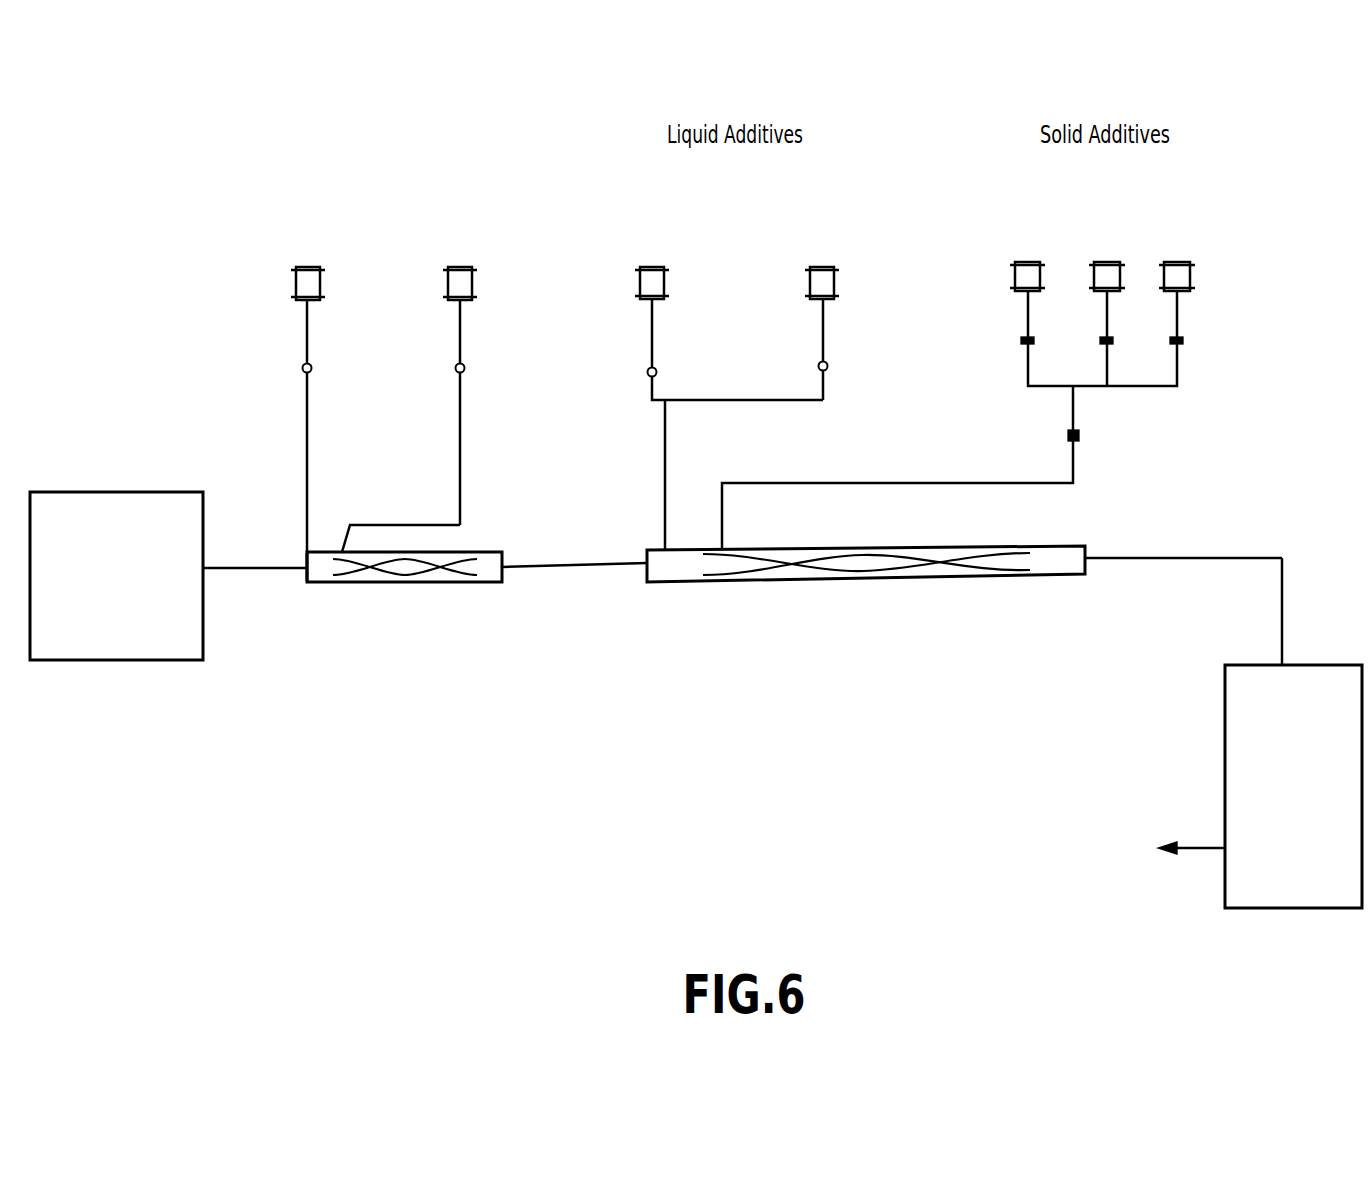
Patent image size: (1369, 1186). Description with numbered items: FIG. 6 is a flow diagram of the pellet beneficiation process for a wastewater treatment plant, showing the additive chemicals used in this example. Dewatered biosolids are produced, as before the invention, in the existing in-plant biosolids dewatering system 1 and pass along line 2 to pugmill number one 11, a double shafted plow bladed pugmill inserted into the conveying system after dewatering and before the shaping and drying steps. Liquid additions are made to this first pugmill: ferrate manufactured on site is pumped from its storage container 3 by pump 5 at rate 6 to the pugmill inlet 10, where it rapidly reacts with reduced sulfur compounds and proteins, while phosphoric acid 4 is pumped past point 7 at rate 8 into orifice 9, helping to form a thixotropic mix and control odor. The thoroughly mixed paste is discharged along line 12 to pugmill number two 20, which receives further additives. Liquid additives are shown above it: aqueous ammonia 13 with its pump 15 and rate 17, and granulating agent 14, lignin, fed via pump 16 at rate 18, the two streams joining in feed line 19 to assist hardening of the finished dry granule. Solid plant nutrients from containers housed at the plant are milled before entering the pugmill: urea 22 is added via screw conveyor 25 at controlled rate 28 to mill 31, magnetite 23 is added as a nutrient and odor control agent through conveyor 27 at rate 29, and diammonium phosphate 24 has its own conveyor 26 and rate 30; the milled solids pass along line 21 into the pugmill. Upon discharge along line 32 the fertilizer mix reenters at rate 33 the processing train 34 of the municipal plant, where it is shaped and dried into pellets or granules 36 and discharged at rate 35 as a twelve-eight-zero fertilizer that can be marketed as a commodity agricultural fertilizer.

The existing WWTP inplant biosolids dewatering system 1 is at (116, 556).
The biosolids feed line 2 is at (255, 588).
The storage container 3 is at (308, 235).
The phosphoric acid 4 is at (470, 235).
The pump 5 is at (296, 368).
The rate 6 is at (294, 426).
The phosphoric acid valve 7 is at (472, 362).
The rate 8 is at (439, 412).
The orifice 9 is at (401, 537).
The pug mill inlet 10 is at (315, 588).
The pugmill #1 11 is at (404, 610).
The transfer line to second pug mill 12 is at (574, 546).
The aqueous ammonia source 13 is at (648, 235).
The granulating agent 14 is at (823, 225).
The aqueous ammonia valve 15 is at (633, 354).
The pump 16 is at (801, 350).
The aqueous ammonia feed line 17 is at (717, 351).
The rate 18 is at (801, 349).
The liquid additives feed line 19 is at (642, 475).
The pugmill #2 20 is at (866, 536).
The solid additives feed line 21 is at (897, 495).
The urea 22 is at (1014, 243).
The magnetite 23 is at (1093, 229).
The diammonium phosphate source 24 is at (1210, 228).
The screw conveyor 25 is at (1006, 337).
The magnetite valve 26 is at (1085, 340).
The conveyor 27 is at (1156, 337).
The controlled rate 28 is at (1031, 339).
The magnetite feed line 29 is at (1077, 339).
The DAP feed line 30 is at (1142, 338).
The mill 31 is at (1068, 426).
The pug mill discharge line 32 is at (1183, 541).
The rate 33 is at (1301, 611).
The processing train 34 is at (1275, 786).
The rate 35 is at (1191, 834).
The pellets or granules 36 is at (1102, 841).